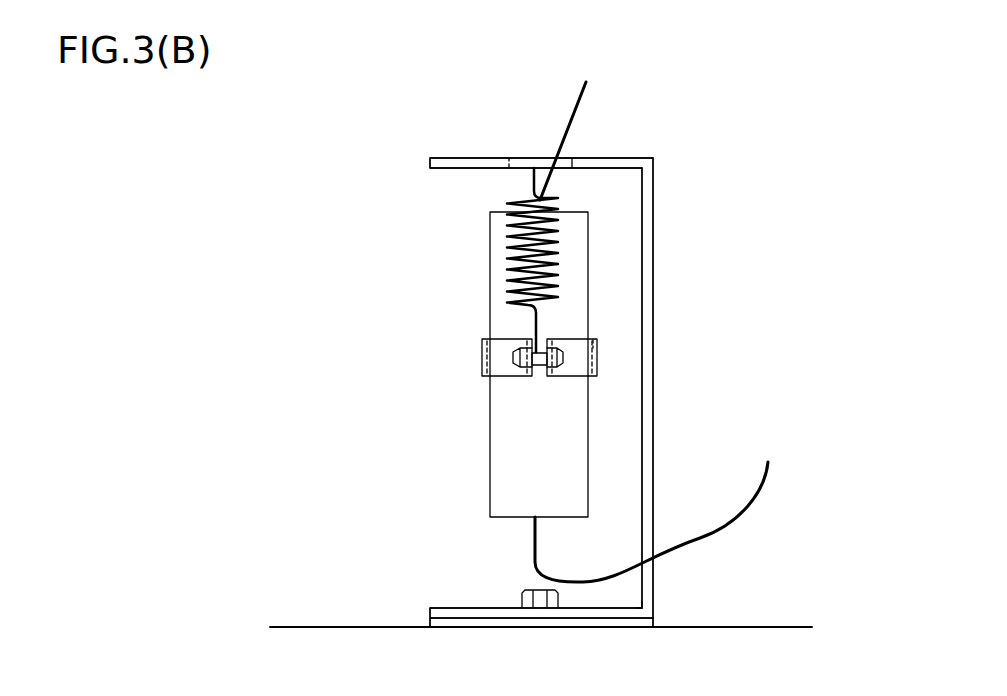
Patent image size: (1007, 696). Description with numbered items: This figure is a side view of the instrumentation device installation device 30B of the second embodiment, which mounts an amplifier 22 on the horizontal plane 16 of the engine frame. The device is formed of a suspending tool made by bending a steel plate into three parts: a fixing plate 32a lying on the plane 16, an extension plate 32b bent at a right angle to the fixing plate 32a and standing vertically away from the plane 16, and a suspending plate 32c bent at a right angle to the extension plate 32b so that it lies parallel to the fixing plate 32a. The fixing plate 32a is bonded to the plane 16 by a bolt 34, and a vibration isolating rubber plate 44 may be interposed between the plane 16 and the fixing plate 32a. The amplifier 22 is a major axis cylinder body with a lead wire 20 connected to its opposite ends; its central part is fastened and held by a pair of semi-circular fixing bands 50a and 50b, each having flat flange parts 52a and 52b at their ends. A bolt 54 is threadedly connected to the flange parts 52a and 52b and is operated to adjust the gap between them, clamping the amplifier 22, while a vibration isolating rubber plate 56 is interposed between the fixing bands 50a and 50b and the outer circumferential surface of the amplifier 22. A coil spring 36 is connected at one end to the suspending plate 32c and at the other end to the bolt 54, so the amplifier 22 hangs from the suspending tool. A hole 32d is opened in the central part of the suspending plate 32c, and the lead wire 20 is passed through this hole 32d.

The plane 16 is at (796, 625).
The lead wire 20 is at (570, 127).
The amplifier 22 is at (505, 452).
The instrumentation device installation device 30B is at (655, 418).
The fixing plate 32a is at (440, 608).
The extension plate 32b is at (655, 205).
The suspending plate 32c is at (452, 158).
The hole 32d is at (512, 158).
The bolt 34 is at (540, 590).
The coil spring 36 is at (510, 280).
The vibration isolating rubber plate 44 is at (640, 605).
The fixing band 50a is at (598, 353).
The fixing band 50b is at (482, 355).
The flange part 52a is at (560, 377).
The flange part 52b is at (520, 377).
The bolt 54 is at (575, 338).
The vibration isolating rubber plate 56 is at (593, 340).